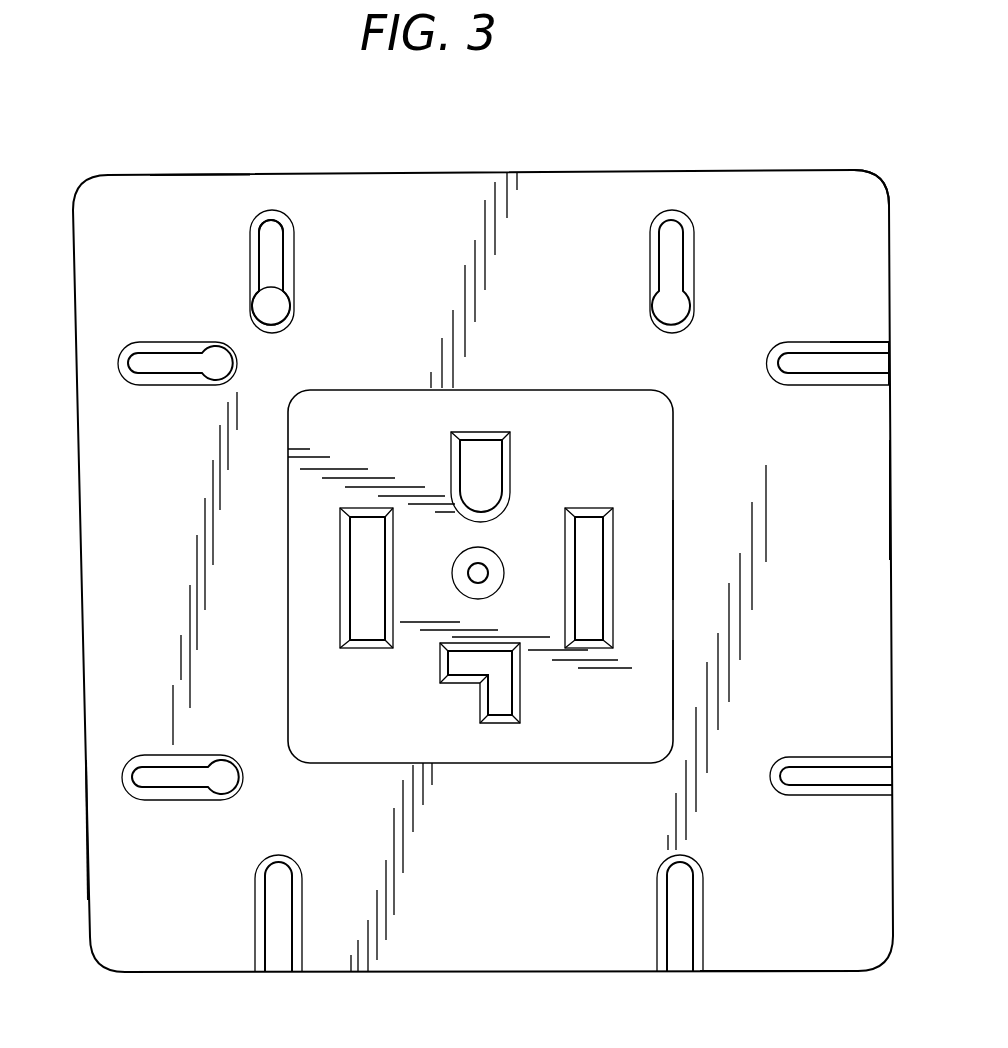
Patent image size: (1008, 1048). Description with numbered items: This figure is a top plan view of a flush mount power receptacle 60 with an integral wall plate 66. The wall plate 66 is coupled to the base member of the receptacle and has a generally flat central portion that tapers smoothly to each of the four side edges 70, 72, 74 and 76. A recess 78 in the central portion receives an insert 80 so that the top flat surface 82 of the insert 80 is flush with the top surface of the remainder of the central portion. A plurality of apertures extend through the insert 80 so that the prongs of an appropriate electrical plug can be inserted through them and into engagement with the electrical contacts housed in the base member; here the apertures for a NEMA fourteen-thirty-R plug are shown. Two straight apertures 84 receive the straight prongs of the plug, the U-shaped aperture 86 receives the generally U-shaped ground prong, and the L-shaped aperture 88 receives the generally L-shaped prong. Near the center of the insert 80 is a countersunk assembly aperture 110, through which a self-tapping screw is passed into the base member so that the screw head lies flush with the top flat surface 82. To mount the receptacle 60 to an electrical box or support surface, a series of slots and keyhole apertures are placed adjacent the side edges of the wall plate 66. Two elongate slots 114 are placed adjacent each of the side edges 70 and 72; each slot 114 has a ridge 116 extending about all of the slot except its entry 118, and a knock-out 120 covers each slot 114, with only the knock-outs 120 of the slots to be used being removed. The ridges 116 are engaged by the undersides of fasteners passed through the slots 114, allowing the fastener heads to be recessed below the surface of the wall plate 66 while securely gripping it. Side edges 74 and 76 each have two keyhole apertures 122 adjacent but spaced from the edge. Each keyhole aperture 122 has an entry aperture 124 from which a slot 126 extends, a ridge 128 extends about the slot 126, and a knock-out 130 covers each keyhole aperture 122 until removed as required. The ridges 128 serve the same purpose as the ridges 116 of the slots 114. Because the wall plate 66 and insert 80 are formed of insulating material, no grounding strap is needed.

The flush mount power receptacle 60 is at (477, 150).
The wall plate 66 is at (812, 160).
The side edge 70 is at (891, 498).
The side edge 72 is at (768, 972).
The side edge 74 is at (88, 828).
The side edge 76 is at (200, 174).
The recess 78 is at (710, 452).
The insert 80 is at (679, 665).
The top flat surface 82 is at (638, 557).
The straight apertures 84 is at (343, 567).
The U-shaped aperture 86 is at (481, 450).
The L-shaped aperture 88 is at (507, 693).
The assembly aperture 110 is at (475, 572).
The elongate slots 114 is at (837, 352).
The ridge 116 is at (873, 343).
The entry 118 is at (891, 360).
The knock-out 120 is at (817, 367).
The keyhole apertures 122 is at (295, 266).
The entry aperture 124 is at (277, 315).
The slot 126 is at (268, 257).
The ridge 128 is at (289, 226).
The knock-out 130 is at (180, 362).